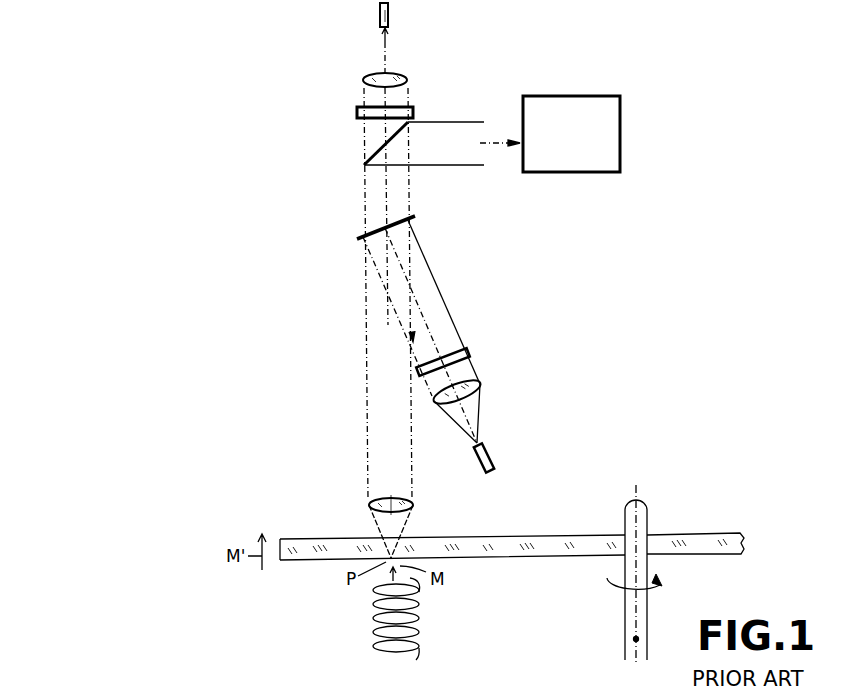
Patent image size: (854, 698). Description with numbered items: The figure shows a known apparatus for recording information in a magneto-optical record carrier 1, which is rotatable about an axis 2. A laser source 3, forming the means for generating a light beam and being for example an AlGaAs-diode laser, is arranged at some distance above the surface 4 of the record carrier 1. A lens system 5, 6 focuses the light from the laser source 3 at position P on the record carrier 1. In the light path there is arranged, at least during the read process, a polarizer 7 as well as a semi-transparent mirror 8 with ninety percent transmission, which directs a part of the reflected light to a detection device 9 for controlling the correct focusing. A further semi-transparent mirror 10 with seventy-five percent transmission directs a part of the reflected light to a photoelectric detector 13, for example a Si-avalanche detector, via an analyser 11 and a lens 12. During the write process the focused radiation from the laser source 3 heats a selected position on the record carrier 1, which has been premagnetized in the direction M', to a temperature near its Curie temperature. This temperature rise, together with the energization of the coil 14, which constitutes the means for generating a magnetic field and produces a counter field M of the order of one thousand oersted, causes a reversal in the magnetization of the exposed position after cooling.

The magneto-optical record carrier 1 is at (694, 535).
The axis 2 is at (634, 640).
The laser source 3 is at (411, 16).
The surface 4 is at (320, 537).
The lens system 5 is at (360, 81).
The lens system 6 is at (412, 506).
The polarizer 7 is at (410, 114).
The semi-transparent mirror 8 is at (364, 143).
The detection device 9 is at (568, 162).
The semi-transparent mirror 10 is at (366, 222).
The analyser 11 is at (472, 354).
The lens 12 is at (478, 386).
The photoelectric detector 13 is at (491, 455).
The coil 14 is at (374, 637).